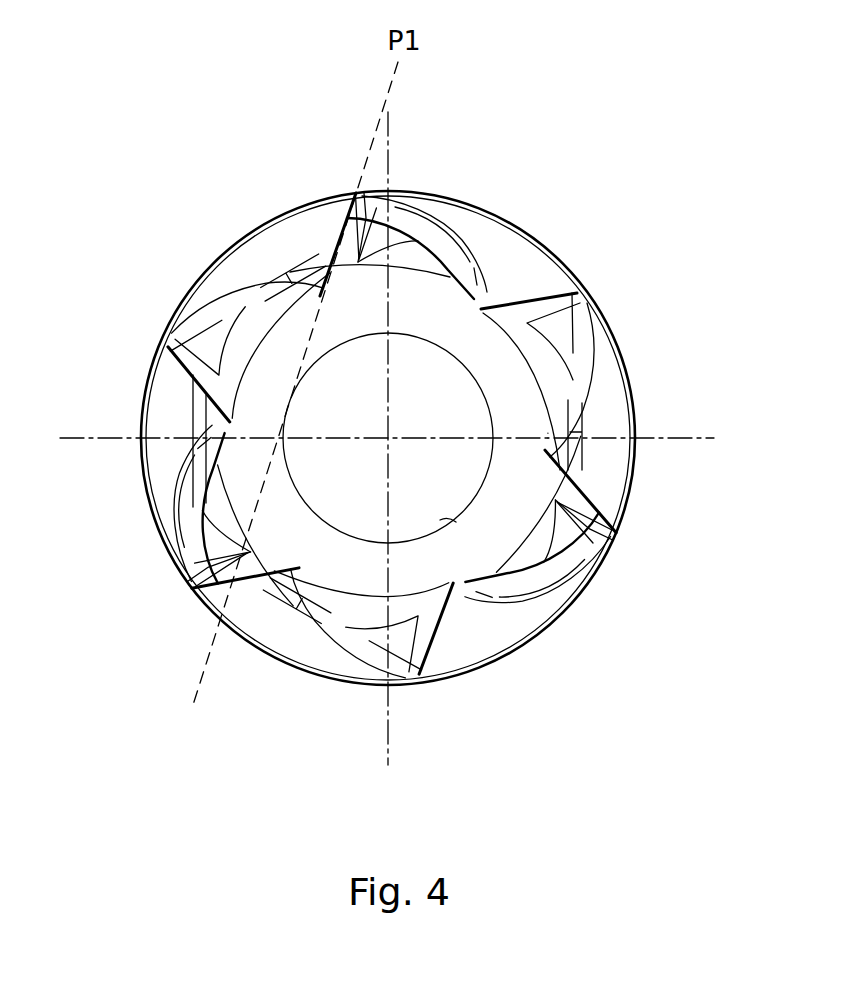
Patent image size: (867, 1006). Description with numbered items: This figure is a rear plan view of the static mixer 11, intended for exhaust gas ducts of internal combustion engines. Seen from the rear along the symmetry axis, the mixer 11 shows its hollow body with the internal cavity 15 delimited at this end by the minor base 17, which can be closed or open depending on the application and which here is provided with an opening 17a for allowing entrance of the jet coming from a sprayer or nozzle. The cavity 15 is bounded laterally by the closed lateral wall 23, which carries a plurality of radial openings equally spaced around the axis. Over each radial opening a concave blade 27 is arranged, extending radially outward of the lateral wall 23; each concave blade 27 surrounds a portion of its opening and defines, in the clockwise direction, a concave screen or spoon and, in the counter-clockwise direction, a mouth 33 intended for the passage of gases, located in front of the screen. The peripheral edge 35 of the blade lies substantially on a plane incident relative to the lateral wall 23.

The static mixer 11 is at (575, 670).
The cavity 15 is at (338, 482).
The minor base 17 is at (516, 409).
The opening 17a is at (456, 522).
The lateral wall 23 is at (304, 253).
The concave blade 27 is at (427, 211).
The mouth 33 is at (537, 286).
The peripheral edge 35 is at (350, 211).